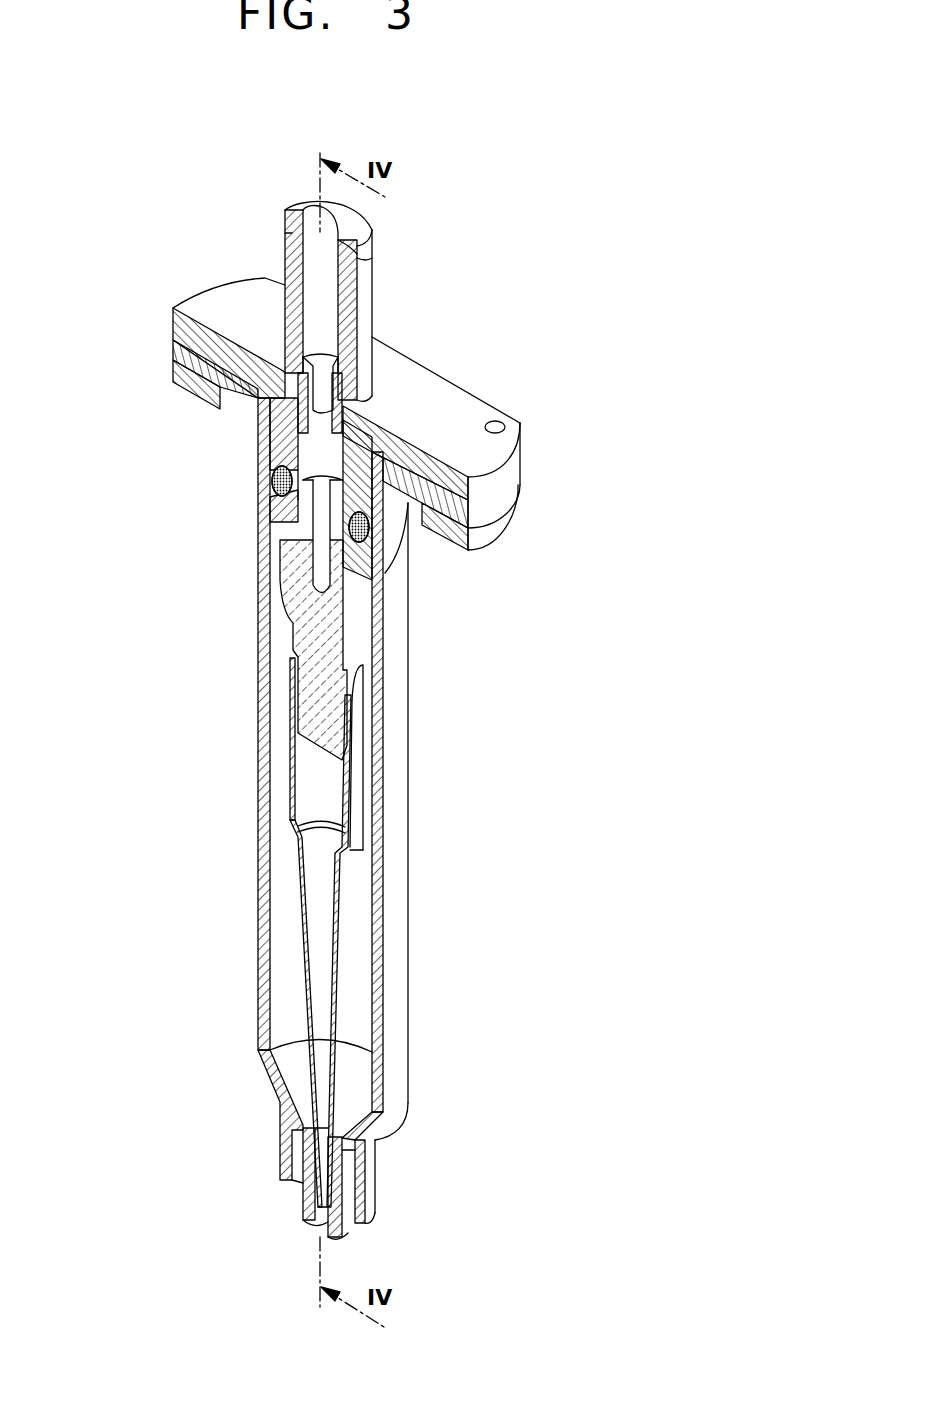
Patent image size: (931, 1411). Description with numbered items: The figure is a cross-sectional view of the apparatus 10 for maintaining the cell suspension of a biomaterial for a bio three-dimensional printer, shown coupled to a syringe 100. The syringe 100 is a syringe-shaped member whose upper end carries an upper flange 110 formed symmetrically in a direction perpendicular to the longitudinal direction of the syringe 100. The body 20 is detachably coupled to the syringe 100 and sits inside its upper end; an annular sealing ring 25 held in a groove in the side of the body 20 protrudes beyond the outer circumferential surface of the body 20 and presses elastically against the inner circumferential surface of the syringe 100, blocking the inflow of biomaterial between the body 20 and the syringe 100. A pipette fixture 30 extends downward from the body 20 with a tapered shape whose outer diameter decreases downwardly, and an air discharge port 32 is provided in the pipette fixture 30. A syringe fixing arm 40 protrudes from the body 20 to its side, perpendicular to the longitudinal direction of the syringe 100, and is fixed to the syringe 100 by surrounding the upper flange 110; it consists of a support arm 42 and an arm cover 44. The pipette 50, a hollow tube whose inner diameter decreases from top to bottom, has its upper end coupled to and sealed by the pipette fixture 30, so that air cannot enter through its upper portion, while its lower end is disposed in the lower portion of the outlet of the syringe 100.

The apparatus for maintaining the cell suspension 10 is at (487, 254).
The body 20 is at (262, 449).
The sealing ring 25 is at (273, 490).
The pipette fixture 30 is at (312, 703).
The air discharge port 32 is at (325, 583).
The syringe fixing arm 40 is at (100, 255).
The support arm 42 is at (195, 305).
The arm cover 44 is at (174, 371).
The pipette 50 is at (300, 910).
The syringe 100 is at (258, 1010).
The upper flange 110 is at (228, 345).